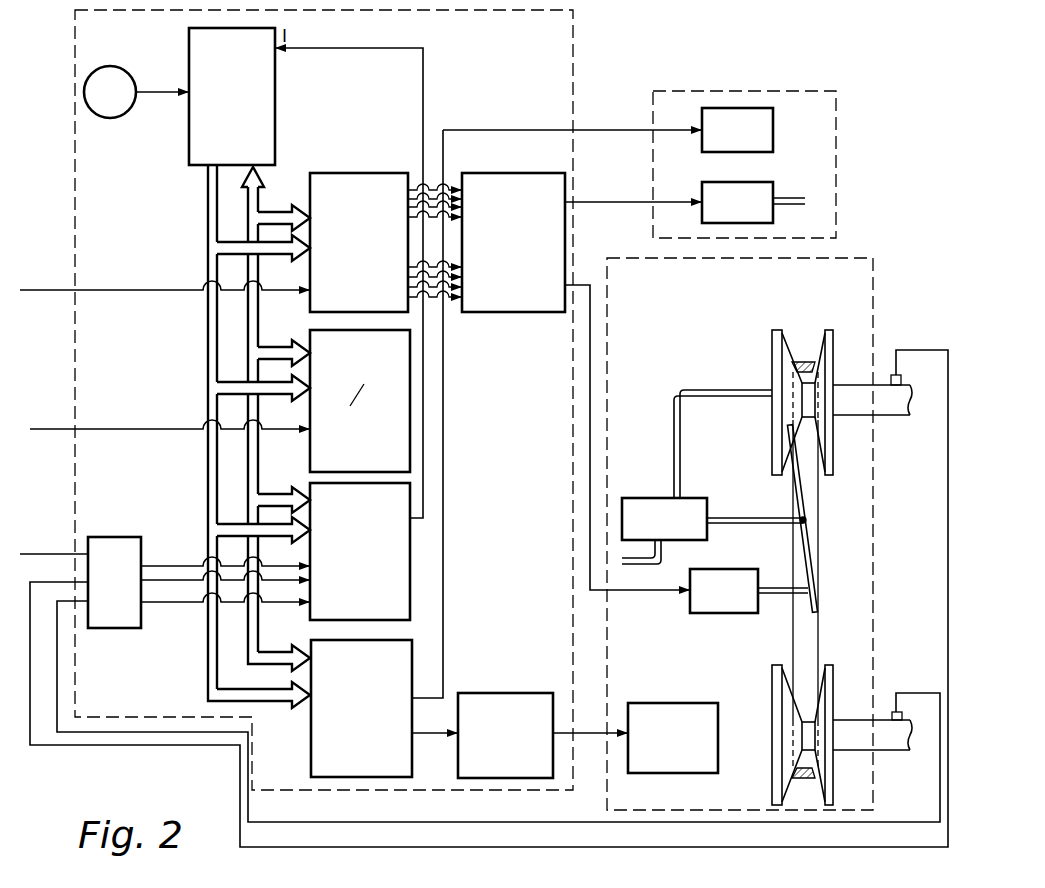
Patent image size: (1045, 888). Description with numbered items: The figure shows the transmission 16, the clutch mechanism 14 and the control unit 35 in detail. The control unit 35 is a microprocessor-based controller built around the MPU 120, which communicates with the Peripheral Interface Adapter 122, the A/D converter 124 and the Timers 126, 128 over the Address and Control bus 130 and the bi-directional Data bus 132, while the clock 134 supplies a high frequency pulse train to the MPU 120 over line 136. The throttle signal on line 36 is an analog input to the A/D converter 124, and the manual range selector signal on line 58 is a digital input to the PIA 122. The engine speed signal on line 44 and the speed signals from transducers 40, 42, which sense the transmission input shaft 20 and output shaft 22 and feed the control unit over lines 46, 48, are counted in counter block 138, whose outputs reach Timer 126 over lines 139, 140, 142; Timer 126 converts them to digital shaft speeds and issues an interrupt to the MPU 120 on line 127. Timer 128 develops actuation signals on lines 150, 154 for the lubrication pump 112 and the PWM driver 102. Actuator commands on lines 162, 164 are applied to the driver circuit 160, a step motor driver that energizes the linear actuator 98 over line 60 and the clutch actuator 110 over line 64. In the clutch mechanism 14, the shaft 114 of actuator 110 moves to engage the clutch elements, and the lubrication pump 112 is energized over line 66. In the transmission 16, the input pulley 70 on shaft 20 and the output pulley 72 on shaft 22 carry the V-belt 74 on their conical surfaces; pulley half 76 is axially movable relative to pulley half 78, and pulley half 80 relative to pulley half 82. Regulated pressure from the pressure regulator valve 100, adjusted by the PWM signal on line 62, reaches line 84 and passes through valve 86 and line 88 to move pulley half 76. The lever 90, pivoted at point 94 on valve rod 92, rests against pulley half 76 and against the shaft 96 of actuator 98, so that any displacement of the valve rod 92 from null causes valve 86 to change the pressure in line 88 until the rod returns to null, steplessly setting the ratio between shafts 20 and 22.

The clutch mechanism 14 is at (750, 98).
The transmission 16 is at (860, 262).
The transmission input shaft 20 is at (888, 402).
The transmission output shaft 22 is at (888, 740).
The control unit 35 is at (548, 54).
The throttle signal line 36 is at (136, 432).
The transducer 40 is at (891, 374).
The transducer 42 is at (892, 712).
The line 44 is at (80, 538).
The line 46 is at (947, 510).
The line 48 is at (920, 694).
The manual range selector signal line 58 is at (136, 293).
The control unit output line 60 is at (590, 540).
The control unit output line 62 is at (606, 732).
The control unit output line 64 is at (598, 200).
The control unit output line 66 is at (597, 128).
The input pulley 70 is at (779, 385).
The output pulley 72 is at (778, 711).
The V-belt 74 is at (805, 360).
The pulley half 76 is at (775, 431).
The pulley half 78 is at (829, 445).
The pulley half 80 is at (829, 686).
The pulley half 82 is at (773, 720).
The line 84 is at (638, 564).
The valve 86 is at (658, 497).
The line 88 is at (672, 394).
The lever 90 is at (812, 584).
The valve rod 92 is at (730, 524).
The point 94 is at (806, 521).
The shaft 96 is at (784, 600).
The linear actuator 98 is at (690, 600).
The pressure regulator valve 100 is at (668, 703).
The PWM driver 102 is at (502, 694).
The linear actuator 110 is at (736, 184).
The lubrication pump 112 is at (758, 120).
The shaft 114 is at (790, 198).
The microprocessor (MPU) 120 is at (262, 92).
The Peripheral Interface Adapter (PIA) 122 is at (372, 186).
The Analog-to-Digital converter (A/D) 124 is at (398, 448).
The Timer 126 is at (398, 594).
The line 127 is at (425, 404).
The Timer 128 is at (352, 742).
The Address and Control bus 130 is at (208, 302).
The Data bus 132 is at (255, 303).
The Clock 134 is at (108, 118).
The line 136 is at (157, 88).
The counter block 138 is at (102, 629).
The line 139 is at (168, 582).
The line 140 is at (158, 564).
The line 142 is at (186, 604).
The line 150 is at (447, 506).
The line 154 is at (444, 734).
The driver circuit 160 is at (508, 294).
The lines 162 is at (456, 318).
The lines 164 is at (458, 176).